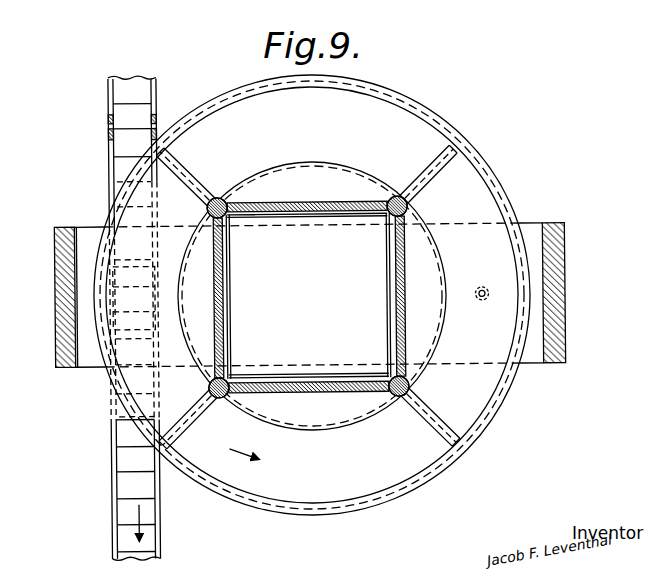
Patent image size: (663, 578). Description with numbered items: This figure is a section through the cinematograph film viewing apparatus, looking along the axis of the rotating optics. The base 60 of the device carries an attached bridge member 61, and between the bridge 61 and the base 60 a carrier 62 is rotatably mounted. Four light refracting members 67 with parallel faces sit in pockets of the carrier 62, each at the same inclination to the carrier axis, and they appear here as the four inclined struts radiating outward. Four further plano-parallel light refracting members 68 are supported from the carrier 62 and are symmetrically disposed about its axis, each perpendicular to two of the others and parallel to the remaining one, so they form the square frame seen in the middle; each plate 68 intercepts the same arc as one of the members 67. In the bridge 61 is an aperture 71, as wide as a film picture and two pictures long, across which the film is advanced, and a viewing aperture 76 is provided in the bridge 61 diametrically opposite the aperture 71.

The base 60 is at (337, 279).
The bridge member 61 is at (553, 305).
The carrier 62 is at (335, 180).
The light refracting members 67 is at (425, 135).
The light refracting members 68 is at (371, 207).
The aperture 71 is at (117, 330).
The viewing aperture 76 is at (482, 288).